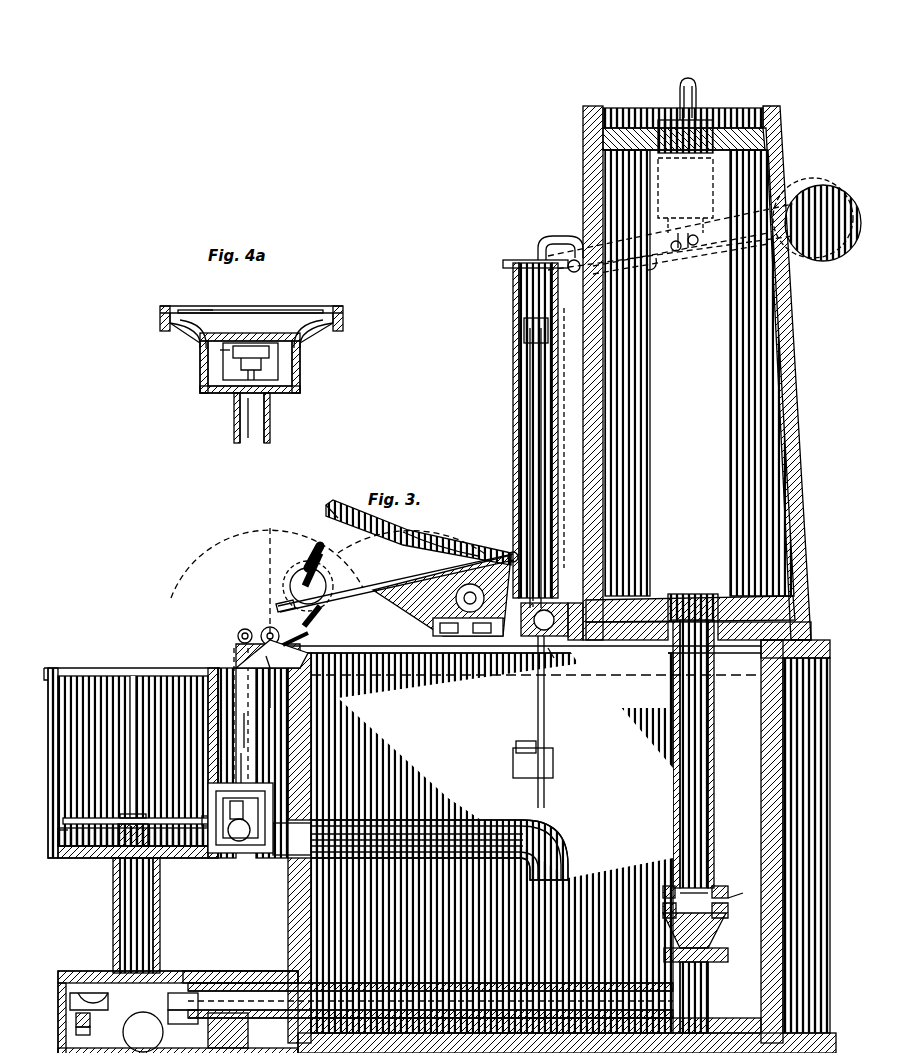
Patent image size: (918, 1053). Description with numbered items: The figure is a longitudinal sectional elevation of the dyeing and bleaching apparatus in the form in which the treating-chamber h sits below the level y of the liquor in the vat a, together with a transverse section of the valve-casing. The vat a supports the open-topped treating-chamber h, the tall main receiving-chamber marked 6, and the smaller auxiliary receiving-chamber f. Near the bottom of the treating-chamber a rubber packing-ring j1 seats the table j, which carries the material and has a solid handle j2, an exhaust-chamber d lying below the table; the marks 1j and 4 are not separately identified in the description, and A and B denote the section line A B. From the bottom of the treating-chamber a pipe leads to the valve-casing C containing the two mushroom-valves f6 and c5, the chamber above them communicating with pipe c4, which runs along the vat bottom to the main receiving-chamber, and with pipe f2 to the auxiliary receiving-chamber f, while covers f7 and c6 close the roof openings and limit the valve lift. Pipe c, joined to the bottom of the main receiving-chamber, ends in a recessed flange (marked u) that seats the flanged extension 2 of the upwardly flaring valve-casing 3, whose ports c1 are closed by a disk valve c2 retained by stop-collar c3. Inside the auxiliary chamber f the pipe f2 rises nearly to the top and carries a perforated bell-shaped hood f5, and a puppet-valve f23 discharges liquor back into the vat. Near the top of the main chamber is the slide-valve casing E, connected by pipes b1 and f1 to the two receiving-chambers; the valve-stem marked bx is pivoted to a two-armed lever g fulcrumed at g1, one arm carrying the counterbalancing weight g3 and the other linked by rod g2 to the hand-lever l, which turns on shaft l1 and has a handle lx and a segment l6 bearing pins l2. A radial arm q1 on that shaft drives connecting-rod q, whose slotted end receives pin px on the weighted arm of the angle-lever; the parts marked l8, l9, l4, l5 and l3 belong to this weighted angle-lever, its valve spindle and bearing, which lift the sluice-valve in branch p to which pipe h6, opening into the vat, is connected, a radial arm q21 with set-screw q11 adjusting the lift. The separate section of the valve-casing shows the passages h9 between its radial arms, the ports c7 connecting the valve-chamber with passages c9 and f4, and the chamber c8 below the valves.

In FIG. 3, the cylinder 6 is at (697, 373).
In FIG. 3, the pipe b1 is at (685, 95).
In FIG. 3, the casing E is at (685, 195).
In FIG. 3, the weight g3 is at (792, 195).
In FIG. 3, the pivot bx is at (684, 230).
In FIG. 3, the two-armed lever g is at (670, 241).
In FIG. 3, the fulcrum g1 is at (686, 240).
In FIG. 3, the rod g2 is at (566, 436).
In FIG. 3, the pipe c is at (668, 780).
In FIG. 3, the collar u is at (660, 876).
In FIG. 3, the disk valve c2 is at (655, 905).
In FIG. 3, the ports c1 is at (695, 973).
In FIG. 3, the flanged extension 2 is at (694, 897).
In FIG. 3, the valve-casing 3 is at (739, 877).
In FIG. 3, the vat a is at (535, 841).
In FIG. 3, the flange 4 is at (712, 668).
In FIG. 3, the level y is at (502, 675).
In FIG. 3, the valve-casing C is at (438, 1012).
In FIG. 3, the pipe c4 is at (590, 975).
In FIG. 3, the mushroom-valve c5 is at (152, 1032).
In FIG. 3, the mushroom-valve f6 is at (82, 1019).
In FIG. 3, the cover f7 is at (74, 975).
In FIG. 3, the stop-collar c3 is at (206, 1025).
In FIG. 3, the cover c6 is at (172, 962).
In FIG. 3, the pipe h6 is at (472, 812).
In FIG. 3, the section line B is at (292, 839).
In FIG. 3, the treating-chamber h is at (132, 763).
In FIG. 3, the solid handle j2 is at (128, 700).
In FIG. 3, the table j is at (158, 811).
In FIG. 3, the rubber packing-ring j1 is at (194, 812).
In FIG. 3, the lip 1j is at (55, 826).
In FIG. 3, the exhaust-chamber d is at (133, 838).
In FIG. 3, the section line A is at (155, 836).
In FIG. 3, the auxiliary receiving-chamber f is at (507, 278).
In FIG. 3, the pipe f1 is at (554, 236).
In FIG. 3, the bell-shaped hood f5 is at (516, 320).
In FIG. 3, the pipe f2 is at (520, 350).
In FIG. 3, the radial arm q1 is at (470, 592).
In FIG. 3, the puppet-valve f23 is at (510, 750).
In FIG. 3, the passage f4 is at (548, 648).
In FIG. 3, the pins l2 is at (248, 755).
In FIG. 3, the two-armed lever l is at (400, 565).
In FIG. 3, the handle lx is at (345, 512).
In FIG. 3, the connecting-rod q is at (447, 568).
In FIG. 3, the pin px is at (286, 572).
In FIG. 3, the arm l8 is at (312, 560).
In FIG. 3, the arm l9 is at (305, 540).
In FIG. 3, the segment l6 is at (255, 628).
In FIG. 3, the pivot l4 is at (233, 645).
In FIG. 3, the set-screw q11 is at (300, 616).
In FIG. 3, the radial arm q21 is at (318, 640).
In FIG. 3, the branch p is at (274, 666).
In FIG. 3, the rod l5 is at (246, 712).
In FIG. 3, the rod l3 is at (244, 728).
In FIG. 3, the shaft l1 is at (246, 768).
In FIG. 4A, the passages h9 is at (156, 318).
In FIG. 4A, the ports c7 is at (222, 326).
In FIG. 4A, the chamber c8 is at (215, 362).
In FIG. 4A, the passage c9 is at (220, 386).